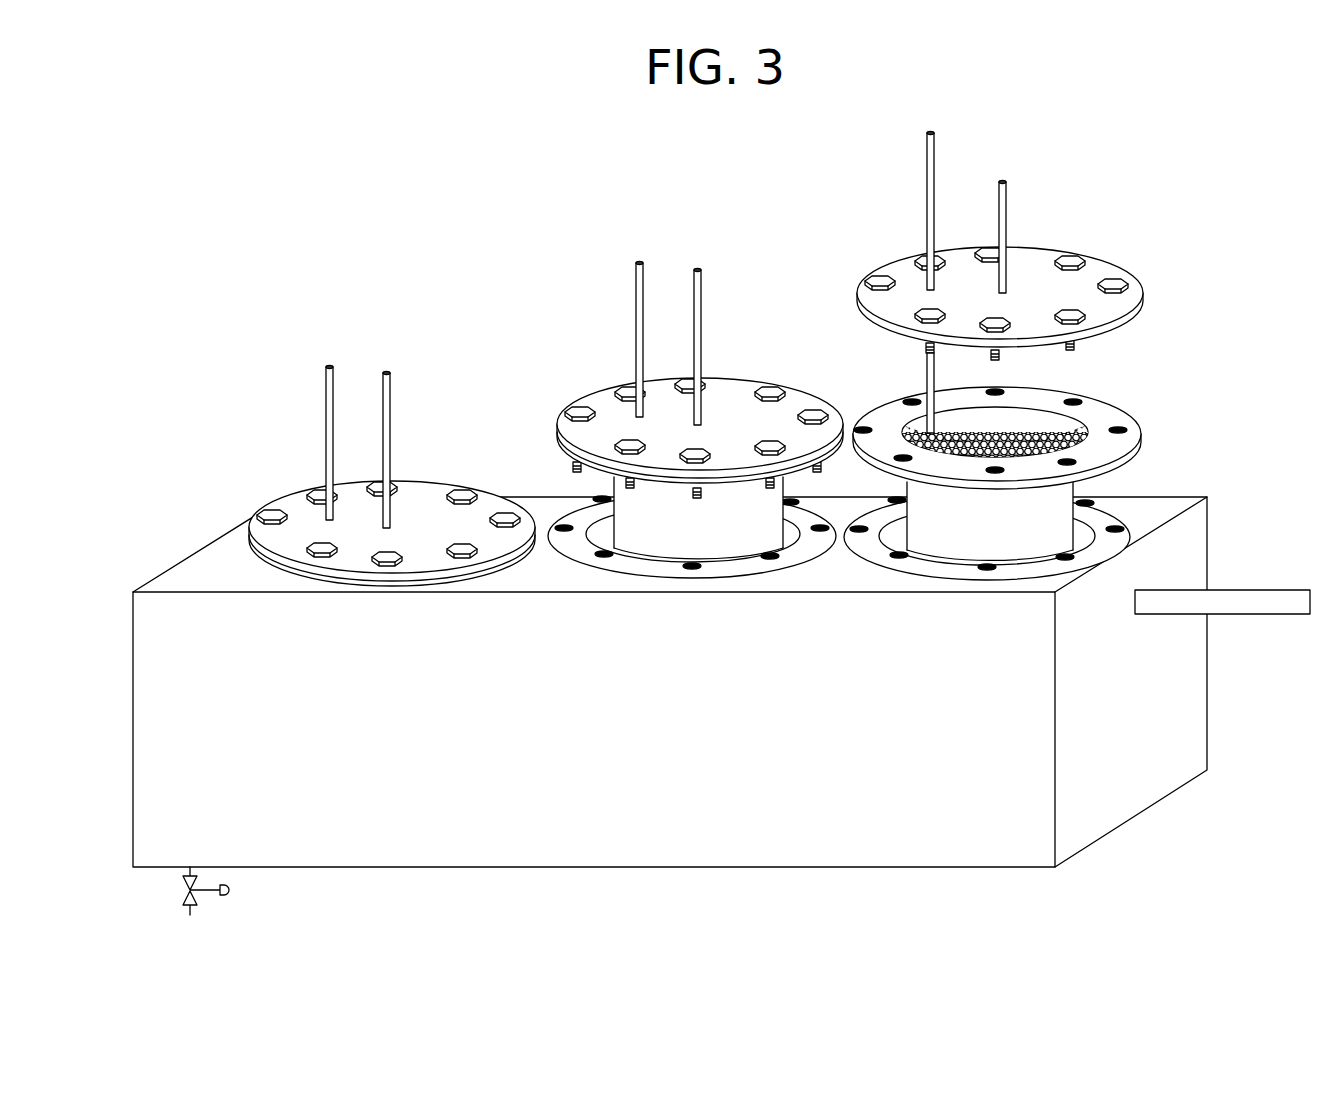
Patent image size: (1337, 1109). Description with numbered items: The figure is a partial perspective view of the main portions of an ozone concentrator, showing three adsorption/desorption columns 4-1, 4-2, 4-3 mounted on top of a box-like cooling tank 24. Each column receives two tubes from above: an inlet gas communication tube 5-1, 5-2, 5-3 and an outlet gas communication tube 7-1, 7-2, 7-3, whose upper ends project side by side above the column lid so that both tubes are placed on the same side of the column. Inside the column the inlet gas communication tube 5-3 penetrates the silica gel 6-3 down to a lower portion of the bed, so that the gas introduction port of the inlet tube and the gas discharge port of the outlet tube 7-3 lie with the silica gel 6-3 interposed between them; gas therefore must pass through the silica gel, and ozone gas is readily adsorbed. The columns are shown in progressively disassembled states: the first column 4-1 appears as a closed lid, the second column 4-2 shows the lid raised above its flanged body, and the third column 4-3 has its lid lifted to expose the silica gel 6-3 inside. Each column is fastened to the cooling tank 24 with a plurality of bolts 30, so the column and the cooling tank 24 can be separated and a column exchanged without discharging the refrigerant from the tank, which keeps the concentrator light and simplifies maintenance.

The adsorption/desorption column 4-1 is at (400, 545).
The adsorption/desorption column 4-2 is at (693, 522).
The adsorption/desorption column 4-3 is at (1003, 528).
The inlet gas communication tube 5-1 is at (328, 388).
The inlet gas communication tube 5-2 is at (637, 292).
The inlet gas communication tube 5-3 is at (932, 200).
The outlet gas communication tube 7-1 is at (384, 388).
The outlet gas communication tube 7-2 is at (696, 290).
The outlet gas communication tube 7-3 is at (1002, 212).
The silica gel 6-3 is at (1045, 436).
The bolt 30 is at (1078, 257).
The cooling tank 24 is at (494, 818).